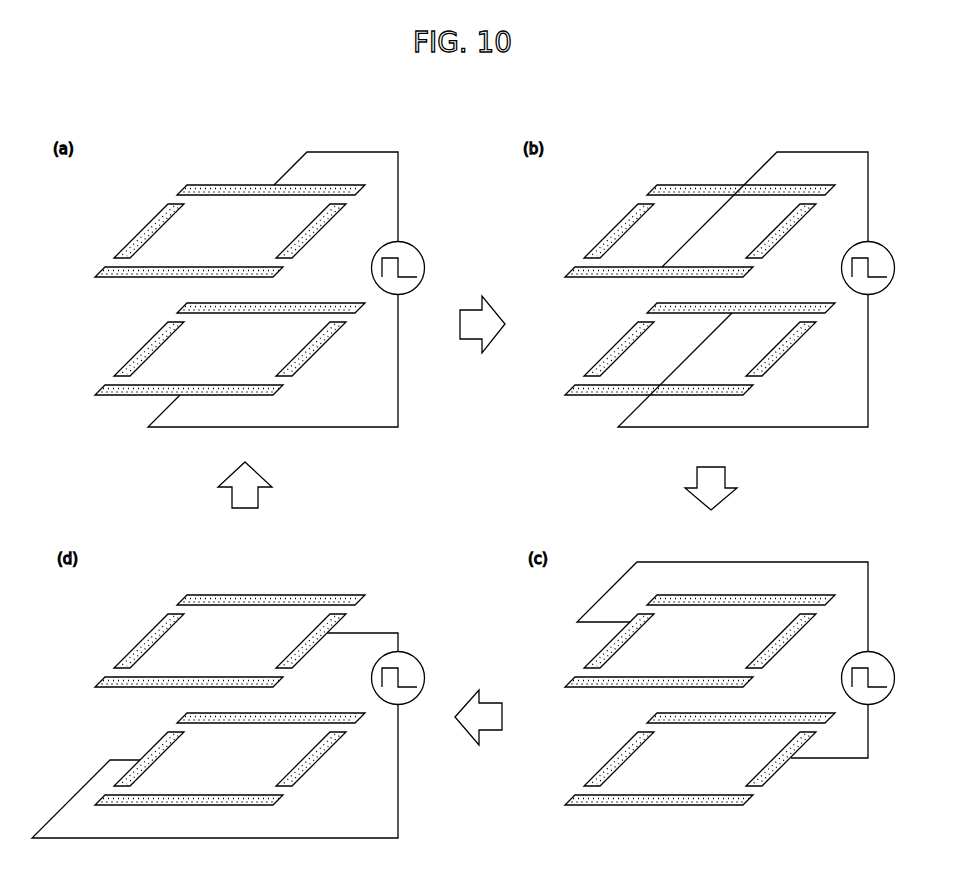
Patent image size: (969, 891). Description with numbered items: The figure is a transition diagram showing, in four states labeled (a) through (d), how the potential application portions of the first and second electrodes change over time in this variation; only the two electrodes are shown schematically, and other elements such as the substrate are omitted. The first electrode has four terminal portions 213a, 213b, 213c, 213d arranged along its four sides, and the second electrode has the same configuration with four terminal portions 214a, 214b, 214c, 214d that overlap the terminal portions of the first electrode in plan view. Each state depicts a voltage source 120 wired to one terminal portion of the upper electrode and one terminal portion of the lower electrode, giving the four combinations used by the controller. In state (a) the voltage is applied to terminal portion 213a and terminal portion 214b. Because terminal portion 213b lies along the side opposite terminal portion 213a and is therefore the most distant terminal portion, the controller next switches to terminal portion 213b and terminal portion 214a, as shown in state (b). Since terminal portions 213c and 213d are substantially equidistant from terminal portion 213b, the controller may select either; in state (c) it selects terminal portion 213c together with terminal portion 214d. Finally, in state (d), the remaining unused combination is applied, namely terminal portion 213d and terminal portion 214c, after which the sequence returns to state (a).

The terminal portion 213a is at (222, 185).
The terminal portion 213b is at (153, 277).
The terminal portion 213c is at (139, 233).
The terminal portion 213d is at (320, 231).
The terminal portion 214a is at (327, 304).
The terminal portion 214b is at (153, 395).
The terminal portion 214c is at (139, 351).
The terminal portion 214d is at (320, 349).
The voltage application unit (pulse power supply) 120 is at (423, 255).